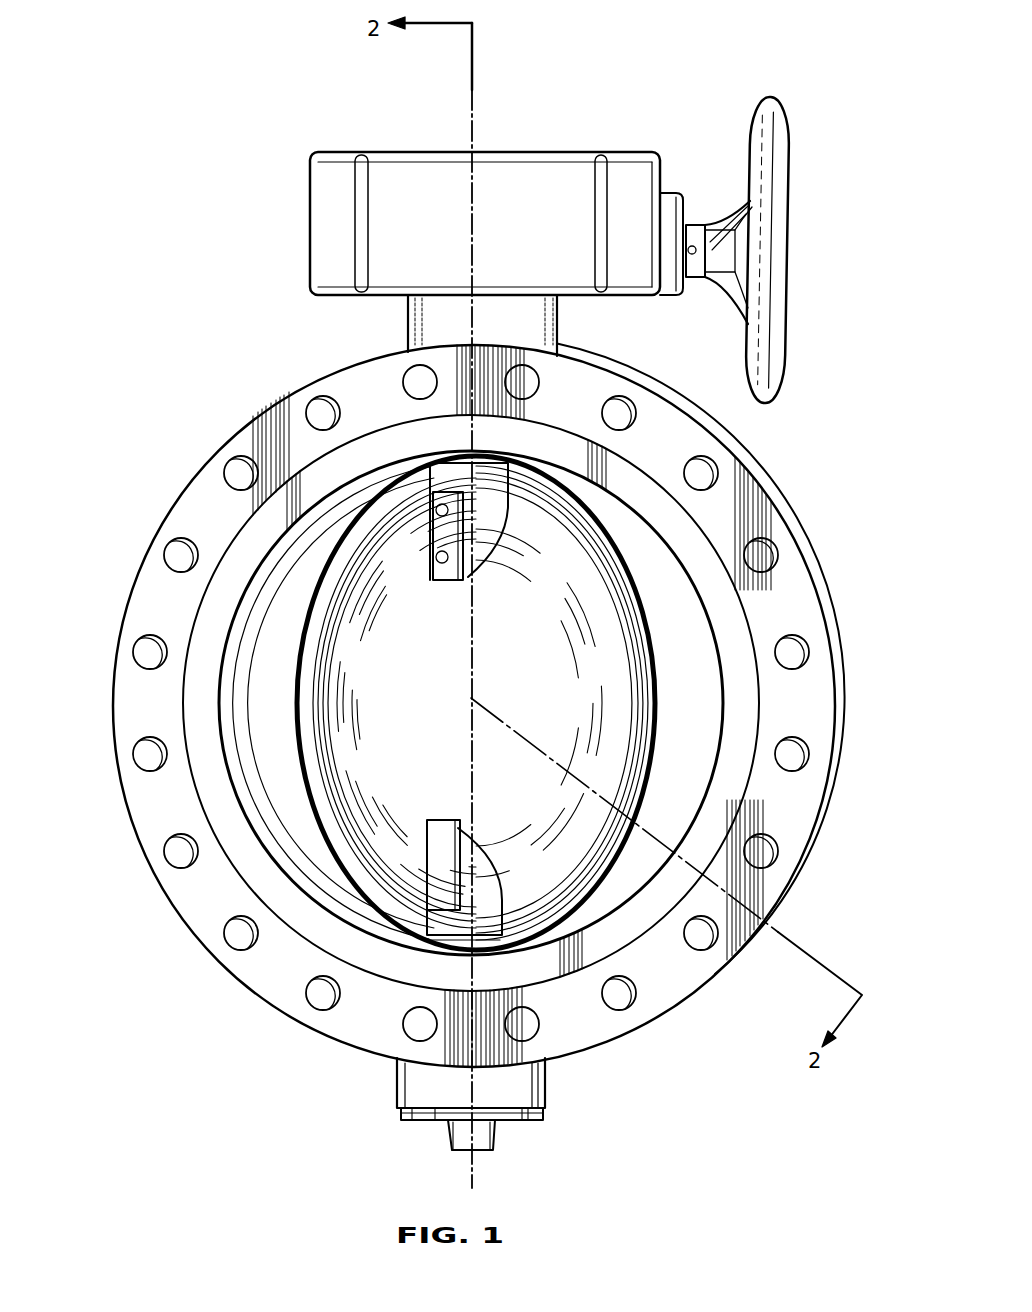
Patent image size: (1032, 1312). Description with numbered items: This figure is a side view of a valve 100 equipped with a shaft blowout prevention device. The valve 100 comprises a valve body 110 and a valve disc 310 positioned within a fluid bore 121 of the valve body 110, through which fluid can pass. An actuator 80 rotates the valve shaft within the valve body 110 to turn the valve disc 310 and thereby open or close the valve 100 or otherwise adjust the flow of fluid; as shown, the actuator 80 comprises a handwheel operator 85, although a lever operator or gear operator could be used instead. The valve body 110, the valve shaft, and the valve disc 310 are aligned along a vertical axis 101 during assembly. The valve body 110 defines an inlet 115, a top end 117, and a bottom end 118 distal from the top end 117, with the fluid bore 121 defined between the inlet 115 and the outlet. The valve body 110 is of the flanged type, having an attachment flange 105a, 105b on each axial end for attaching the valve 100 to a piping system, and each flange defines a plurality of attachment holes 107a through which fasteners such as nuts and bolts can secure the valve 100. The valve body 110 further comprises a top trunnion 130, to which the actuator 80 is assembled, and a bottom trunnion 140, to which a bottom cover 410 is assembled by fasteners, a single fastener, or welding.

The valve 100 is at (190, 104).
The actuator 80 is at (309, 236).
The handwheel operator 85 is at (790, 147).
The vertical axis 101 is at (474, 117).
The top end 117 is at (517, 287).
The top trunnion 130 is at (405, 322).
The attachment holes 107a is at (172, 545).
The attachment flange 105a is at (797, 615).
The attachment flange 105b is at (818, 532).
The fluid bore 121 is at (242, 680).
The inlet 115 is at (715, 772).
The valve disc 310 is at (390, 806).
The valve body 110 is at (418, 1083).
The bottom trunnion 140 is at (548, 1087).
The bottom end 118 is at (433, 1112).
The bottom cover 410 is at (530, 1122).